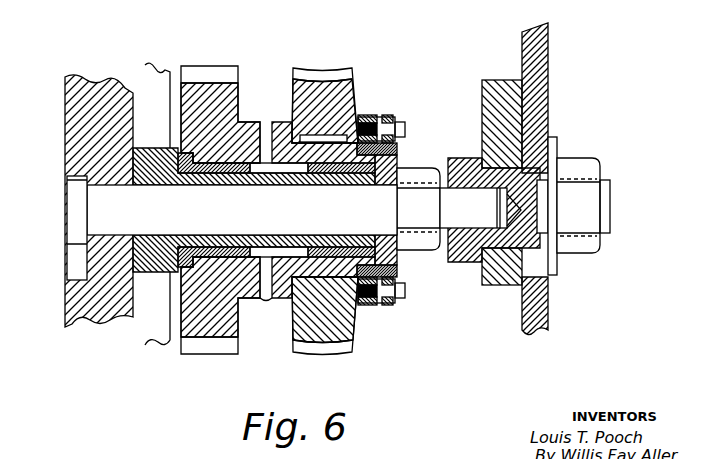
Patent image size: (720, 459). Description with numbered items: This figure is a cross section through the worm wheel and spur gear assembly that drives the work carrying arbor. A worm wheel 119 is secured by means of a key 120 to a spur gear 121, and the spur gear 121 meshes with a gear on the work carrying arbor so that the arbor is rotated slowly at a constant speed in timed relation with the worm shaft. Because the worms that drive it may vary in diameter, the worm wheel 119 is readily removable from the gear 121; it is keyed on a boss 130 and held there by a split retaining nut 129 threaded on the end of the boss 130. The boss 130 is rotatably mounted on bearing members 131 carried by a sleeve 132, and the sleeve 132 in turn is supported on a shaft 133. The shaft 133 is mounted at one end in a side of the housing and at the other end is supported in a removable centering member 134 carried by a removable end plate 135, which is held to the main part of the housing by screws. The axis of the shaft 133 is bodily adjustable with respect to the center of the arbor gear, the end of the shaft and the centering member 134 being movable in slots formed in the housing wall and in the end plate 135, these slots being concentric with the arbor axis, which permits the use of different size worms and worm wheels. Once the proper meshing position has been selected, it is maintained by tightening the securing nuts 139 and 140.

The worm wheel 119 is at (330, 135).
The key 120 is at (352, 110).
The spur gear 121 is at (238, 92).
The split retaining nut 129 is at (388, 118).
The boss 130 is at (398, 143).
The bearing members 131 is at (225, 168).
The sleeve 132 is at (165, 180).
The shaft 133 is at (108, 221).
The removable centering member 134 is at (470, 160).
The removable end plate 135 is at (545, 65).
The securing nut 139 is at (423, 250).
The securing nut 140 is at (582, 253).